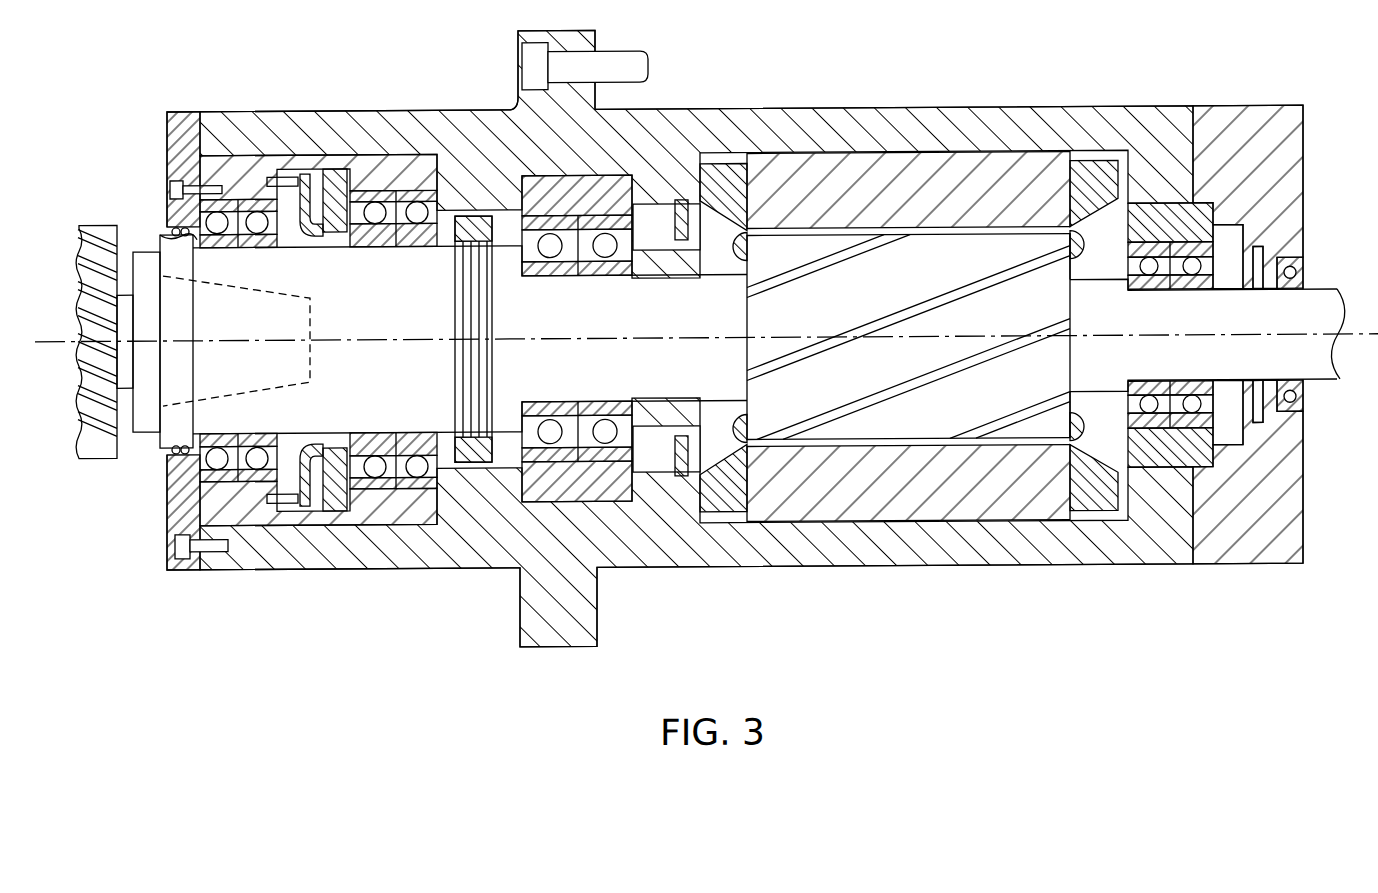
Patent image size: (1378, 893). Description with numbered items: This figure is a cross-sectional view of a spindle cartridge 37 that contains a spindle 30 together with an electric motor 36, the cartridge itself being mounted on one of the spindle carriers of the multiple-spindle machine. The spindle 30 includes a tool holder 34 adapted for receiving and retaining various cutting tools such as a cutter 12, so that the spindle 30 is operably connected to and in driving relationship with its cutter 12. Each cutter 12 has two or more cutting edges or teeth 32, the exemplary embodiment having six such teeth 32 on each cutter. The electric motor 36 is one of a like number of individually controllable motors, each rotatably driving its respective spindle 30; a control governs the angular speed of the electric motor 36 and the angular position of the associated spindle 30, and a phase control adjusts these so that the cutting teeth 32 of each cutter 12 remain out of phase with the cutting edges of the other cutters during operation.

The cutter 12 is at (97, 460).
The spindle 30 is at (361, 117).
The cutting teeth 32 is at (83, 230).
The tool holder 34 is at (197, 257).
The electric motor 36 is at (910, 157).
The spindle cartridge 37 is at (1012, 114).